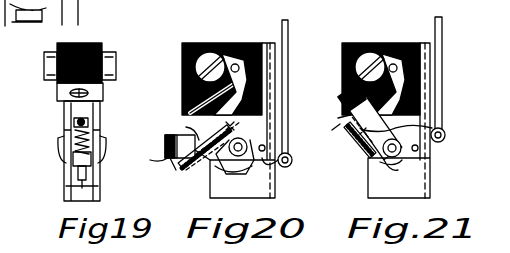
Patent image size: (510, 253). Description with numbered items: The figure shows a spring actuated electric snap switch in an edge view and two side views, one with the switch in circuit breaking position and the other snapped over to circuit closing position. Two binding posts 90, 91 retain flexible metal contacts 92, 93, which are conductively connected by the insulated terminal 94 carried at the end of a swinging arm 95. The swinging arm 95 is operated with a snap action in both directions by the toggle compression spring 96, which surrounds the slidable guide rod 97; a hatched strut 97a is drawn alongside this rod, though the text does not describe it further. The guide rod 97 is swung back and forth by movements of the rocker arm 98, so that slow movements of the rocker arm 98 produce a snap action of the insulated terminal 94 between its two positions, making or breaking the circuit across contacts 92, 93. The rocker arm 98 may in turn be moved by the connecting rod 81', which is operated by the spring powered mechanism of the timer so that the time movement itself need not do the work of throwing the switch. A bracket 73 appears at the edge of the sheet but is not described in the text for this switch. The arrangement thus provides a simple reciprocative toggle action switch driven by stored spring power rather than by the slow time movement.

In FIG. 19, the bracket 73 is at (30, 26).
In FIG. 19, the binding post 90 is at (57, 58).
In FIG. 20, the binding post 90 is at (208, 64).
In FIG. 21, the binding post 90 is at (378, 56).
In FIG. 19, the binding post 91 is at (113, 58).
In FIG. 19, the flexible metal contact 92 is at (64, 109).
In FIG. 19, the flexible metal contact 93 is at (105, 92).
In FIG. 19, the insulated terminal 94 is at (71, 124).
In FIG. 20, the insulated terminal 94 is at (160, 161).
In FIG. 21, the insulated terminal 94 is at (347, 92).
In FIG. 19, the swinging arm 95 is at (70, 163).
In FIG. 20, the swinging arm 95 is at (190, 113).
In FIG. 21, the swinging arm 95 is at (432, 128).
In FIG. 19, the toggle compression spring 96 is at (102, 137).
In FIG. 20, the toggle compression spring 96 is at (236, 175).
In FIG. 21, the toggle compression spring 96 is at (376, 152).
In FIG. 19, the slidable guide rod 97 is at (70, 142).
In FIG. 20, the slidable guide rod 97 is at (187, 148).
In FIG. 21, the slidable guide rod 97 is at (350, 122).
In FIG. 20, the strut 97a is at (181, 170).
In FIG. 19, the rocker arm 98 is at (66, 188).
In FIG. 20, the rocker arm 98 is at (277, 158).
In FIG. 21, the rocker arm 98 is at (441, 141).
In FIG. 20, the connecting rod 81' is at (302, 89).
In FIG. 21, the connecting rod 81' is at (458, 76).